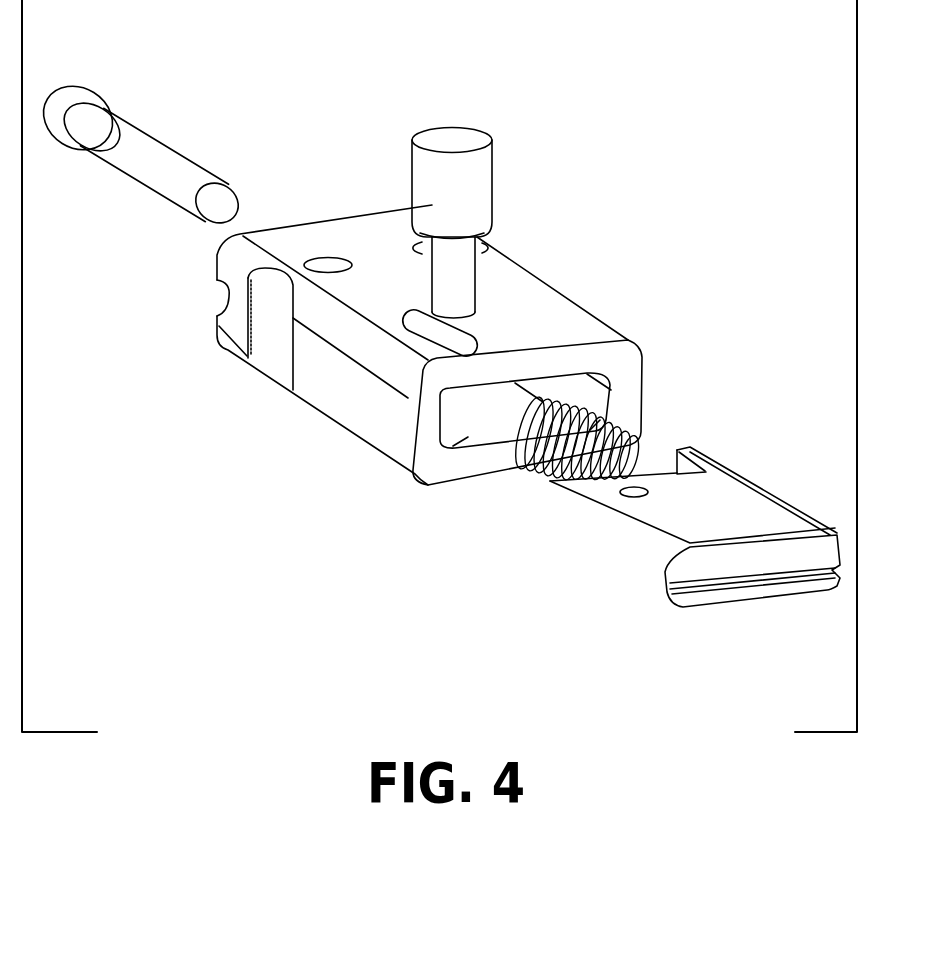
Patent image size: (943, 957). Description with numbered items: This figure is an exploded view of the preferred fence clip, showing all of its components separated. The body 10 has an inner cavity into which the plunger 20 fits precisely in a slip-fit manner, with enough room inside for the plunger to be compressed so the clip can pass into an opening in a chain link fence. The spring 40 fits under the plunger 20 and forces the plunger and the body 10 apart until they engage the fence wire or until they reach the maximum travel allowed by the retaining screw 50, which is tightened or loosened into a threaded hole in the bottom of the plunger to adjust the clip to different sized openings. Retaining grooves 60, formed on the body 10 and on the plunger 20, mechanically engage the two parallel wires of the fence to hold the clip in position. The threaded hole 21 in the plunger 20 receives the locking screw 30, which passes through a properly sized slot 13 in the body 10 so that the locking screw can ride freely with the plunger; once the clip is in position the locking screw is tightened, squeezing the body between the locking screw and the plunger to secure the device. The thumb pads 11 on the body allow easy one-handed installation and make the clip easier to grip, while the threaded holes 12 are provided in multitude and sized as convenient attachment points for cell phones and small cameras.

The body 10 is at (515, 290).
The thumb pads 11 is at (273, 285).
The threaded holes 12 is at (318, 263).
The slot 13 is at (447, 333).
The plunger 20 is at (638, 528).
The threaded hole 21 is at (642, 495).
The locking screw 30 is at (482, 177).
The spring 40 is at (560, 462).
The retaining screw 50 is at (157, 147).
The retaining grooves 60 is at (227, 307).